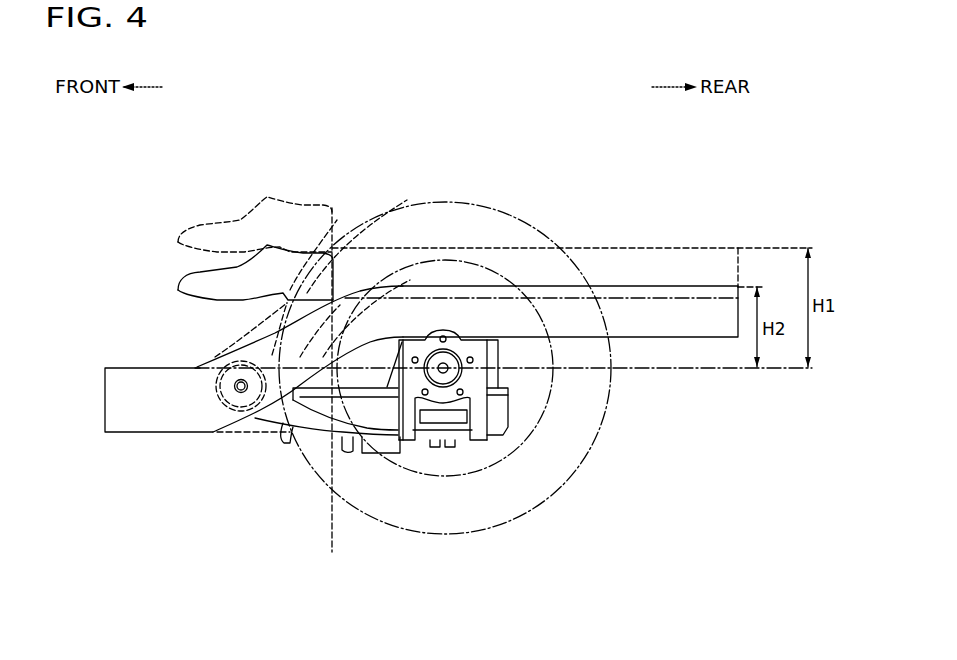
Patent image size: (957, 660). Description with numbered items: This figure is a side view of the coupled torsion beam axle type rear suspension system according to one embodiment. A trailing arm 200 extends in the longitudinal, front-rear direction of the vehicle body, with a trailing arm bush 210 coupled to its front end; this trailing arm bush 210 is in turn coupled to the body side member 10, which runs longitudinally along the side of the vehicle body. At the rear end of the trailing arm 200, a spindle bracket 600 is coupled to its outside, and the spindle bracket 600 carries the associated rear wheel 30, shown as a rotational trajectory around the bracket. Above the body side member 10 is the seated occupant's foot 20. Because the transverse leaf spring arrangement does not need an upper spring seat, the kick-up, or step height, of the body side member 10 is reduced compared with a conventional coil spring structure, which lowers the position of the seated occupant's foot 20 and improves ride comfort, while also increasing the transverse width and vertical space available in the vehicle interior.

The body side member 10 is at (673, 318).
The seated occupant's foot 20 is at (178, 282).
The rear wheel 30 is at (457, 513).
The trailing arm 200 is at (360, 412).
The trailing arm bush 210 is at (230, 390).
The spindle bracket 600 is at (440, 390).